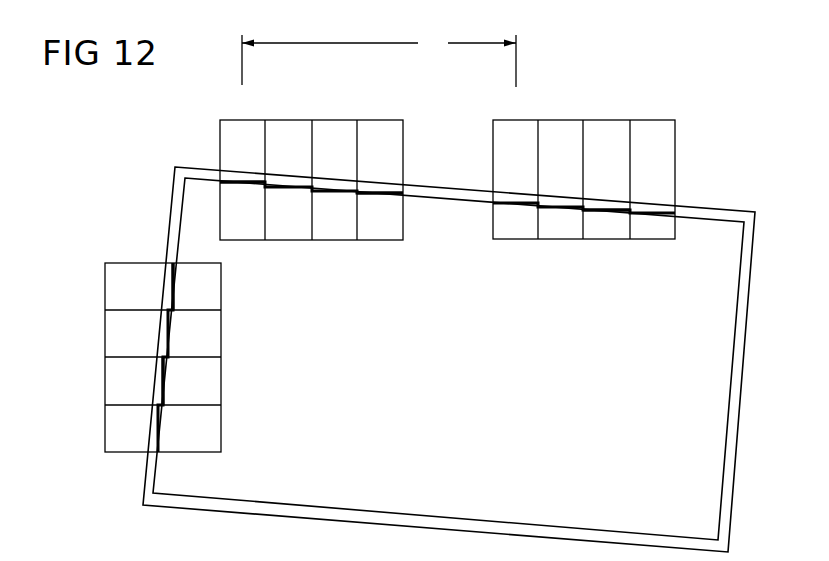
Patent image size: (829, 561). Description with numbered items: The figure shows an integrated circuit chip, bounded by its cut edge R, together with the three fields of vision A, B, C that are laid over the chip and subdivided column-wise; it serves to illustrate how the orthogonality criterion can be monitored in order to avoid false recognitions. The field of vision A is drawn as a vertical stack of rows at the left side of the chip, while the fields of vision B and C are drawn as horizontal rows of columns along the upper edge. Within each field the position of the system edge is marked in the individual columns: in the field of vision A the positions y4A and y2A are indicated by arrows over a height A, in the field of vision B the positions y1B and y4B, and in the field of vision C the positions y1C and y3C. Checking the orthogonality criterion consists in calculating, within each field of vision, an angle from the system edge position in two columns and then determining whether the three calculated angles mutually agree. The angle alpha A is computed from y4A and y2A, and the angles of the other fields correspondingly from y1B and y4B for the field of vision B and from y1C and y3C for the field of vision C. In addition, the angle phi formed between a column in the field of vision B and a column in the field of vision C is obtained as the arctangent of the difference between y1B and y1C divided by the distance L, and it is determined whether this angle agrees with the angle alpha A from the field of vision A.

The cut edge R is at (737, 312).
The field of vision C is at (710, 510).
The distance L is at (379, 58).
The field of vision B is at (380, 59).
The field of vision A is at (63, 286).
The system edge position y1B is at (242, 170).
The system edge position y4B is at (380, 180).
The system edge position y1C is at (516, 191).
The system edge position y3C is at (607, 198).
The system edge position y4A is at (161, 286).
The system edge position y2A is at (151, 383).